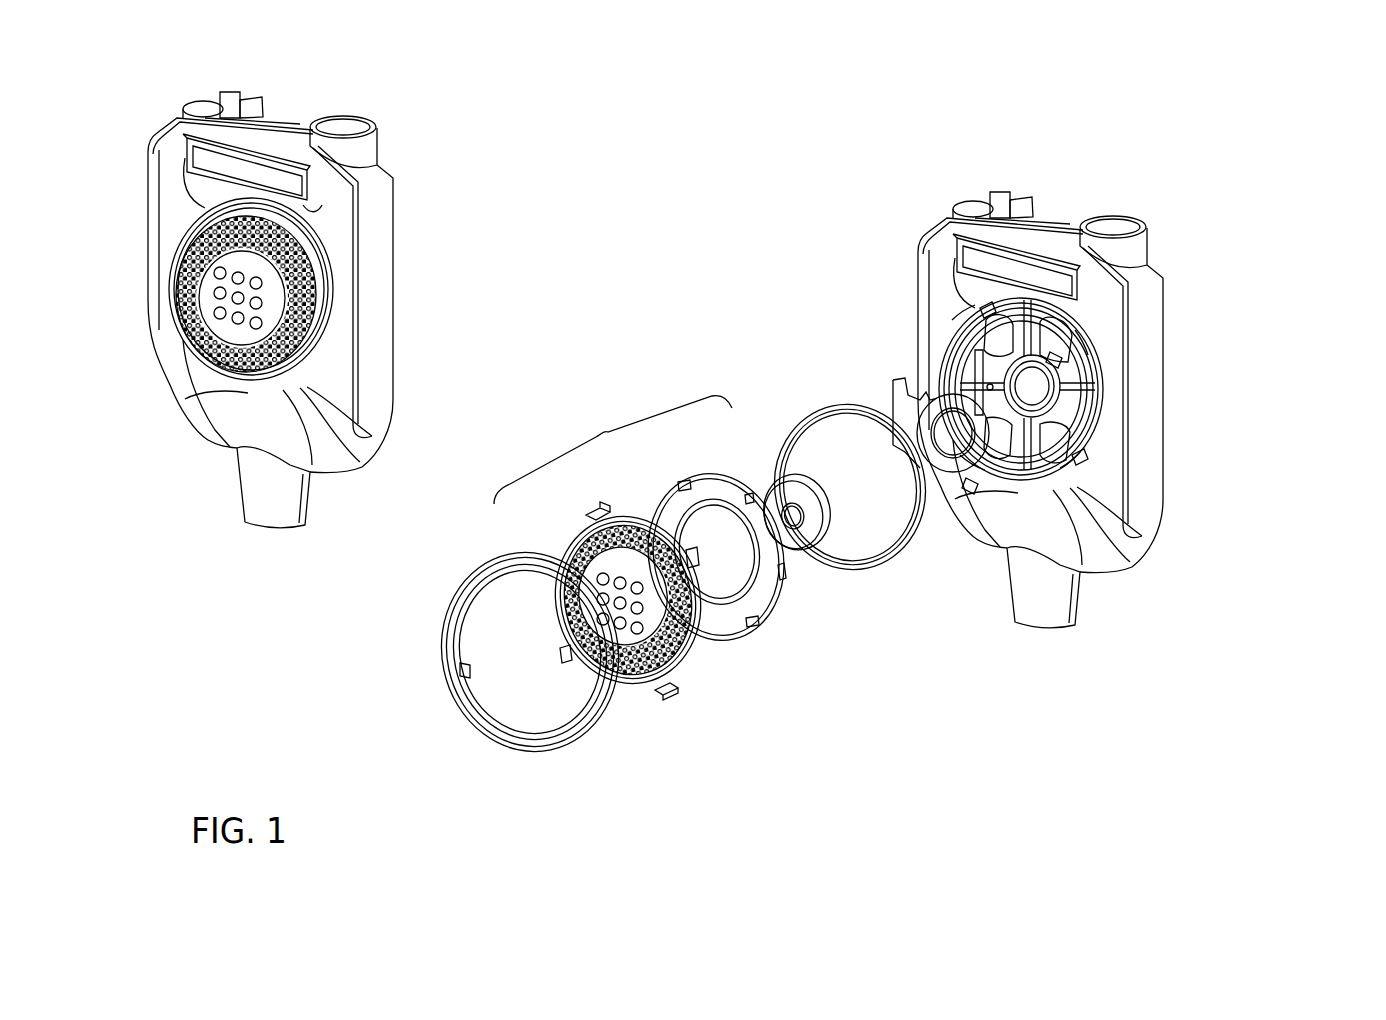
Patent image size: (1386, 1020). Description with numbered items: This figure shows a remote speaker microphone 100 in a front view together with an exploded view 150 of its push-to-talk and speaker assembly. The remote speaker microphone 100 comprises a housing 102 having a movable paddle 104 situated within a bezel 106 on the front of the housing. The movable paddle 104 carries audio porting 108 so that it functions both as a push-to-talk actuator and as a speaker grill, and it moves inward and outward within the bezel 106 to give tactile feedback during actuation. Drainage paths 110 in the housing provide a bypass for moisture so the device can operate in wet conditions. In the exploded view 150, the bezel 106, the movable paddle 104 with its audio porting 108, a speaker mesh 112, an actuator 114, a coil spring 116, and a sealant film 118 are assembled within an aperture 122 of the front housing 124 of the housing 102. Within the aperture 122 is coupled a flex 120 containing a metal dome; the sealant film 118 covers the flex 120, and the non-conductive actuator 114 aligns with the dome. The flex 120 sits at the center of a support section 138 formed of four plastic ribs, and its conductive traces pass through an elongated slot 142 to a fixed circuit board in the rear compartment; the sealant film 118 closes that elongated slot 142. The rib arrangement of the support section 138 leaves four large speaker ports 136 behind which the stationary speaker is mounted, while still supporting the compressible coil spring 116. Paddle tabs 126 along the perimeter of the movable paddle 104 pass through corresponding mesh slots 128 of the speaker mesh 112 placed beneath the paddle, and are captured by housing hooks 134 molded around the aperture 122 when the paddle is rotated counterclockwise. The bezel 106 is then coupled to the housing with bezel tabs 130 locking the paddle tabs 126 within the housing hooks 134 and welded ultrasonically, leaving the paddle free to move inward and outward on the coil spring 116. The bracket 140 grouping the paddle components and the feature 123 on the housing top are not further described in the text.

The remote speaker microphone 100 is at (290, 630).
The housing 102 is at (380, 226).
The movable paddle 104 is at (247, 310).
The bezel 106 is at (323, 287).
The audio porting 108 is at (176, 300).
The drainage paths 110 is at (185, 190).
The speaker mesh 112 is at (770, 627).
The actuator 114 is at (803, 550).
The coil spring 116 is at (913, 573).
The sealant film 118 is at (887, 383).
The flex 120 is at (1047, 378).
The aperture 122 is at (970, 278).
The knob 123 is at (1108, 232).
The front housing 124 is at (1120, 570).
The paddle tabs 126 is at (595, 510).
The mesh slots 128 is at (684, 482).
The bezel tabs 130 is at (472, 670).
The housing hooks 134 is at (960, 313).
The speaker ports 136 is at (987, 307).
The support section 138 is at (1013, 337).
The paddle assembly 140 is at (613, 450).
The elongated slot 142 is at (980, 380).
The exploded view 150 is at (1090, 770).